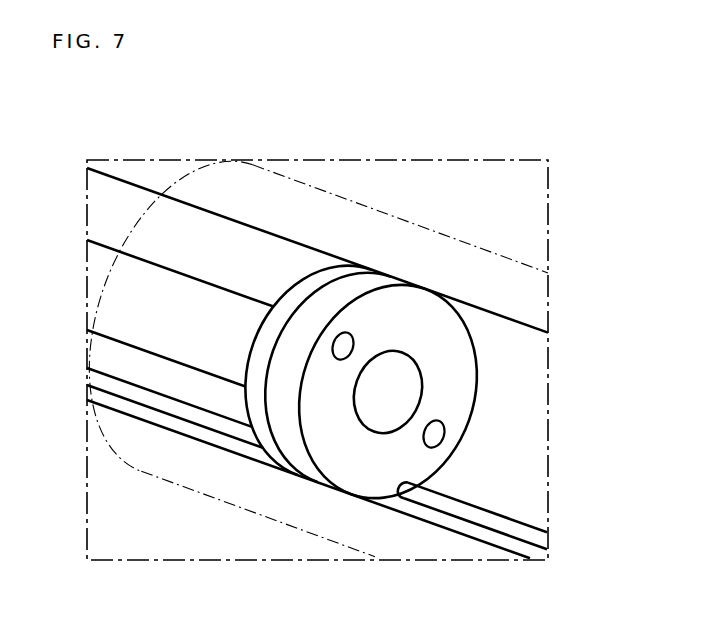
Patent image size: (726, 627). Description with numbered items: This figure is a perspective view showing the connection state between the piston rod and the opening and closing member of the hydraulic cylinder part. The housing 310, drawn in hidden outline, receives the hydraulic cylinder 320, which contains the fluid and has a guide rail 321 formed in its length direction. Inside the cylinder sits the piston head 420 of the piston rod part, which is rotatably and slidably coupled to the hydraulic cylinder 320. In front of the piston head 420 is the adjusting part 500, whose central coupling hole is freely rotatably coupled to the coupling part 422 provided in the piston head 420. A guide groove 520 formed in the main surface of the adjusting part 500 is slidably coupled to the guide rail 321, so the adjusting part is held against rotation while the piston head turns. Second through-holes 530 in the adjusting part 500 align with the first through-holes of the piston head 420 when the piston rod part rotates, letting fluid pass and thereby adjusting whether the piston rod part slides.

The housing 310 is at (276, 522).
The hydraulic cylinder 320 is at (205, 443).
The guide rail 321 is at (510, 527).
The piston head 420 is at (290, 298).
The coupling part 422 is at (405, 382).
The adjusting part 500 is at (383, 297).
The guide groove 520 is at (403, 485).
The second through-holes 530 is at (342, 340).